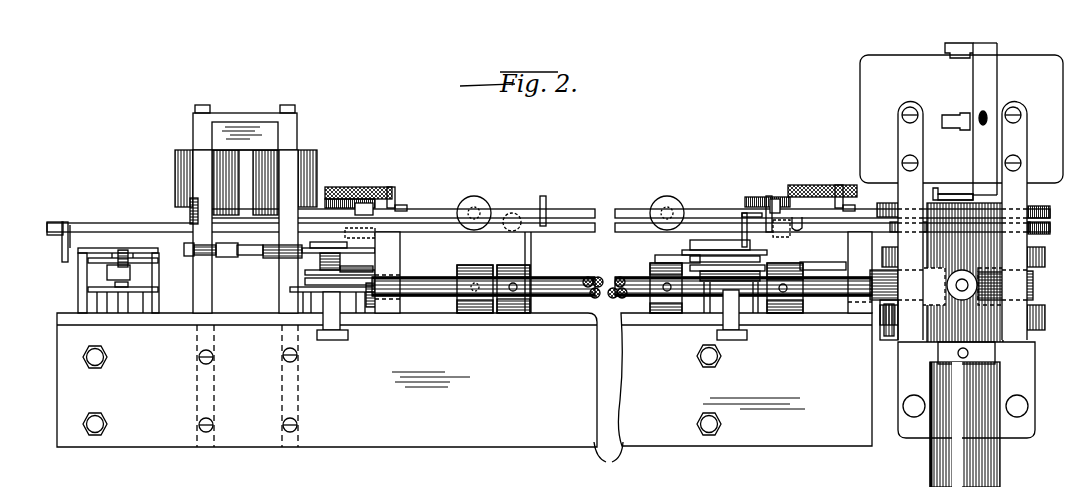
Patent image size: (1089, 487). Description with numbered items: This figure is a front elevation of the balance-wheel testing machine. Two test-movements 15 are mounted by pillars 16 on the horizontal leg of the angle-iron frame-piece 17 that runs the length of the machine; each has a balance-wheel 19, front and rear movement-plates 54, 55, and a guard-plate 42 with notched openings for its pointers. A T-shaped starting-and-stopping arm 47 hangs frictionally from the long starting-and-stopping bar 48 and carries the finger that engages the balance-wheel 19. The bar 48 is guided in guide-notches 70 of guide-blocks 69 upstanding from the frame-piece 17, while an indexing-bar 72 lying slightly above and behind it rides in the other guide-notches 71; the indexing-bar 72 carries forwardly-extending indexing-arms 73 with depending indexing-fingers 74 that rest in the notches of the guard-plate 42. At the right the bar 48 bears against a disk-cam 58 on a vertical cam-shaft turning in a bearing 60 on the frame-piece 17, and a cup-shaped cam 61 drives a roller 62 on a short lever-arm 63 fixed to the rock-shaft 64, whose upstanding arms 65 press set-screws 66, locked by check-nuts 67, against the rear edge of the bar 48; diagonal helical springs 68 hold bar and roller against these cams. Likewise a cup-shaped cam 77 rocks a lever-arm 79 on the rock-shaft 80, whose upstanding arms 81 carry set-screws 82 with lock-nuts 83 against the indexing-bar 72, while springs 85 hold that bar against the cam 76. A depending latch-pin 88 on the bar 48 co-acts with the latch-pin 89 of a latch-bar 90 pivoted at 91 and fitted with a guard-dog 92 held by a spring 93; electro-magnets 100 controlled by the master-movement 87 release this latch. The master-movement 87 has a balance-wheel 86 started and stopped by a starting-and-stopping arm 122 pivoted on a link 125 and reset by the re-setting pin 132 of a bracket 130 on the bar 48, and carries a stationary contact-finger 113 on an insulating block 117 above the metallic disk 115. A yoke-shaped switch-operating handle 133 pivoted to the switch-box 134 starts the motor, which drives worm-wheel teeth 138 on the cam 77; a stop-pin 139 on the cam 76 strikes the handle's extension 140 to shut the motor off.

The test-movement 15 is at (327, 262).
The pillar 16 is at (128, 307).
The angle-iron frame-piece 17 is at (63, 367).
The balance-wheel 19 is at (360, 251).
The guard-plate 42 is at (318, 256).
The starting-and-stopping arm 47 is at (656, 258).
The starting-and-stopping bar 48 is at (620, 232).
The movement-plate 54 is at (378, 232).
The rear movement-plate 55 is at (358, 268).
The disk-cam 58 is at (1050, 229).
The bearing 60 is at (1002, 482).
The cup-shaped cam 61 is at (1045, 258).
The roller 62 is at (947, 280).
The lever-arm 63 is at (934, 287).
The rock-shaft 64 is at (566, 298).
The upstanding arm 65 is at (531, 254).
The set-screw 66 is at (543, 205).
The check-nut 67 is at (512, 213).
The helical spring 68 is at (391, 187).
The guide-block 69 is at (391, 313).
The guide-notch 70 is at (398, 235).
The guide-notch 71 is at (392, 228).
The indexing-bar 72 is at (588, 210).
The indexing-arm 73 is at (364, 203).
The indexing-finger 74 is at (338, 199).
The cam 76 is at (1050, 212).
The cup-shaped cam 77 is at (1045, 315).
The lever-arm 79 is at (1033, 280).
The rock-shaft 80 is at (592, 280).
The upstanding arm 81 is at (460, 201).
The set-screw 82 is at (480, 207).
The lock-nut 83 is at (474, 196).
The spring 85 is at (336, 187).
The balance-wheel 86 is at (134, 252).
The master-movement 87 is at (112, 250).
The latch-pin 88 is at (285, 258).
The latch-pin 89 is at (248, 254).
The latch-bar 90 is at (222, 256).
The pivot 91 is at (200, 255).
The guard-dog 92 is at (190, 212).
The spring 93 is at (185, 246).
The electro-magnet 100 is at (178, 172).
The stationary contact-finger 113 is at (98, 249).
The metallic disk 115 is at (124, 252).
The block 117 is at (96, 256).
The starting-and-stopping arm 122 is at (73, 262).
The link 125 is at (70, 224).
The bracket 130 is at (53, 222).
The re-setting pin 132 is at (62, 242).
The switch-operating handle 133 is at (985, 56).
The switch-box 134 is at (860, 74).
The worm-wheel teeth 138 is at (898, 352).
The stop-pin 139 is at (935, 188).
The extension 140 is at (960, 194).